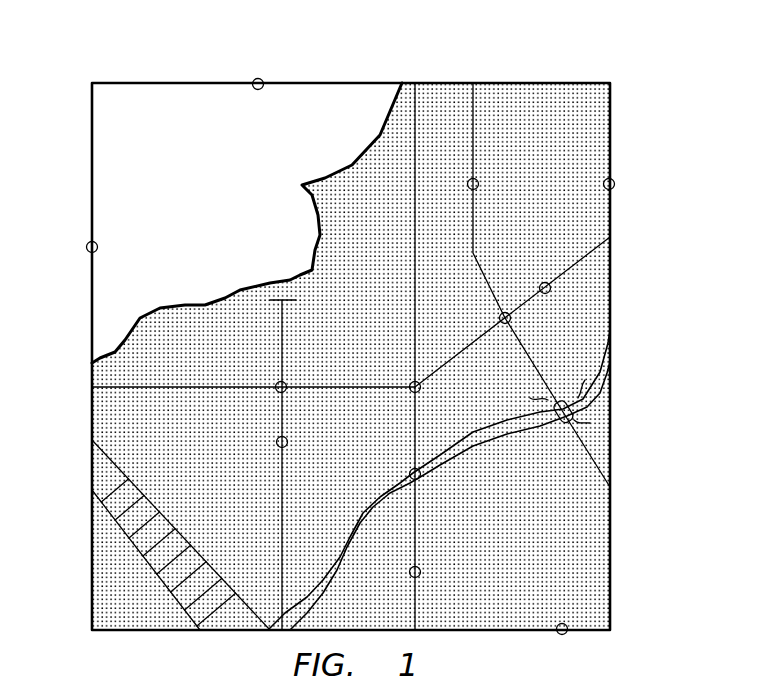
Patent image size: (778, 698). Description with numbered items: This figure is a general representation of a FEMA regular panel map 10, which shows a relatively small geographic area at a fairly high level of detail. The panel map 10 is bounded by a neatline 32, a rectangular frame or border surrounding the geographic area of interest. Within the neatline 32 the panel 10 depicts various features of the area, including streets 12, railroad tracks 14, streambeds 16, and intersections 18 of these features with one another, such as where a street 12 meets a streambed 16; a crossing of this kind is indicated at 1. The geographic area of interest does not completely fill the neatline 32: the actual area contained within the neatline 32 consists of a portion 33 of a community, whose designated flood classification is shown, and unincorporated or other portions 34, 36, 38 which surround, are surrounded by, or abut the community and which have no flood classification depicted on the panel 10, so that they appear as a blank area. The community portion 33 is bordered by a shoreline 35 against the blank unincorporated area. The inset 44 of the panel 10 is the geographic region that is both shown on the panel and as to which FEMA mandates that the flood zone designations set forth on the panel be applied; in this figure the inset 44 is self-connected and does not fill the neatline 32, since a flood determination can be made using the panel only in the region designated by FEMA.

The bridge crossing 1 is at (566, 428).
The regular panel map 10 is at (352, 348).
The streets 12 is at (479, 184).
The railroad tracks 14 is at (185, 557).
The streambeds 16 is at (477, 444).
The intersections 18 is at (276, 384).
The neatline 32 is at (258, 78).
The portion of a community 33 is at (247, 223).
The shoreline 35 is at (230, 300).
The unincorporated or other portions 34 is at (245, 186).
The unincorporated area 36 is at (247, 223).
The unincorporated area 38 is at (147, 106).
The inset 44 is at (588, 118).